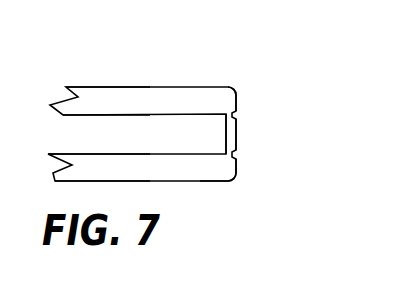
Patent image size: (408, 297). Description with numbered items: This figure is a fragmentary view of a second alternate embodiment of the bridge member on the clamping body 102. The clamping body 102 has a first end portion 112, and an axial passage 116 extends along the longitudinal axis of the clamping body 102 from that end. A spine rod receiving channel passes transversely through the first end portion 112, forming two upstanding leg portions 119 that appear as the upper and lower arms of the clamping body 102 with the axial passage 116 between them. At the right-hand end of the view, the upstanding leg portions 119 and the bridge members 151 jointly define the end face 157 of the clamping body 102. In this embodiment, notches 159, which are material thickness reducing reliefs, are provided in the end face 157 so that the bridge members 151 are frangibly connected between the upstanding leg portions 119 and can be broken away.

The clamping body 102 is at (128, 65).
The upstanding leg portions 119 is at (93, 95).
The notches 159 is at (233, 110).
The end face 157 is at (238, 98).
The bridge members 151 is at (237, 124).
The axial passage 116 is at (212, 132).
The first end portion 112 is at (227, 170).